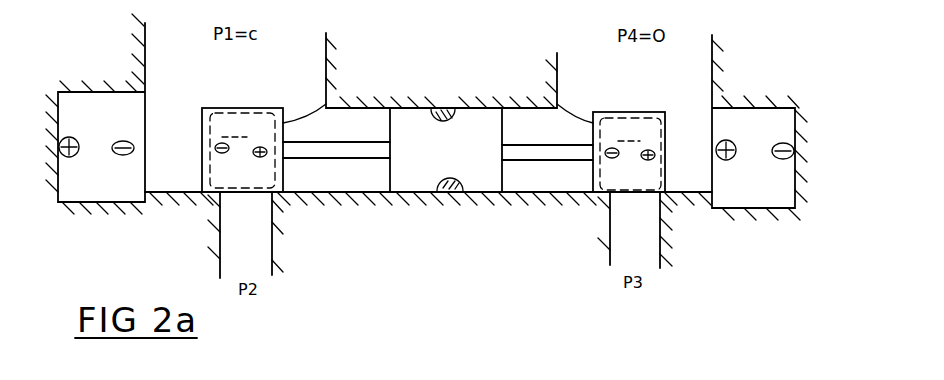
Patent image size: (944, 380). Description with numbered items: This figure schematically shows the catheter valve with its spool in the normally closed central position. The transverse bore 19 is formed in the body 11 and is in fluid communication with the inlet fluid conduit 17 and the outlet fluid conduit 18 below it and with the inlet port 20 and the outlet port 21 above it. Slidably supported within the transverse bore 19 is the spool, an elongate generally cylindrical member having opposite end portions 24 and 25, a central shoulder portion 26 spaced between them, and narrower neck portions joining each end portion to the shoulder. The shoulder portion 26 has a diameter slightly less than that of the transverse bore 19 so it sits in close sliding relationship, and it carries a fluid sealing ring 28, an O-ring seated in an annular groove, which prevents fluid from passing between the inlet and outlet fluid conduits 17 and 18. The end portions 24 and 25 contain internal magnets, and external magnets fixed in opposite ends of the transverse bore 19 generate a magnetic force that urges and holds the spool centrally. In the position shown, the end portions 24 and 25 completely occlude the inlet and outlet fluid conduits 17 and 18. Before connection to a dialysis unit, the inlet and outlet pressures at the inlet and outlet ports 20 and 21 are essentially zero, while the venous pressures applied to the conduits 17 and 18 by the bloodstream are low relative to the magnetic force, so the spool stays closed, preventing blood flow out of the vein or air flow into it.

The body 11 is at (446, 255).
The inlet fluid conduit 17 is at (263, 249).
The outlet fluid conduit 18 is at (627, 248).
The transverse bore 19 is at (367, 183).
The inlet port 20 is at (316, 55).
The outlet port 21 is at (500, 70).
The end portion 24 is at (328, 95).
The end portion 25 is at (557, 100).
The central shoulder portion 26 is at (478, 180).
The fluid sealing ring 28 is at (443, 105).